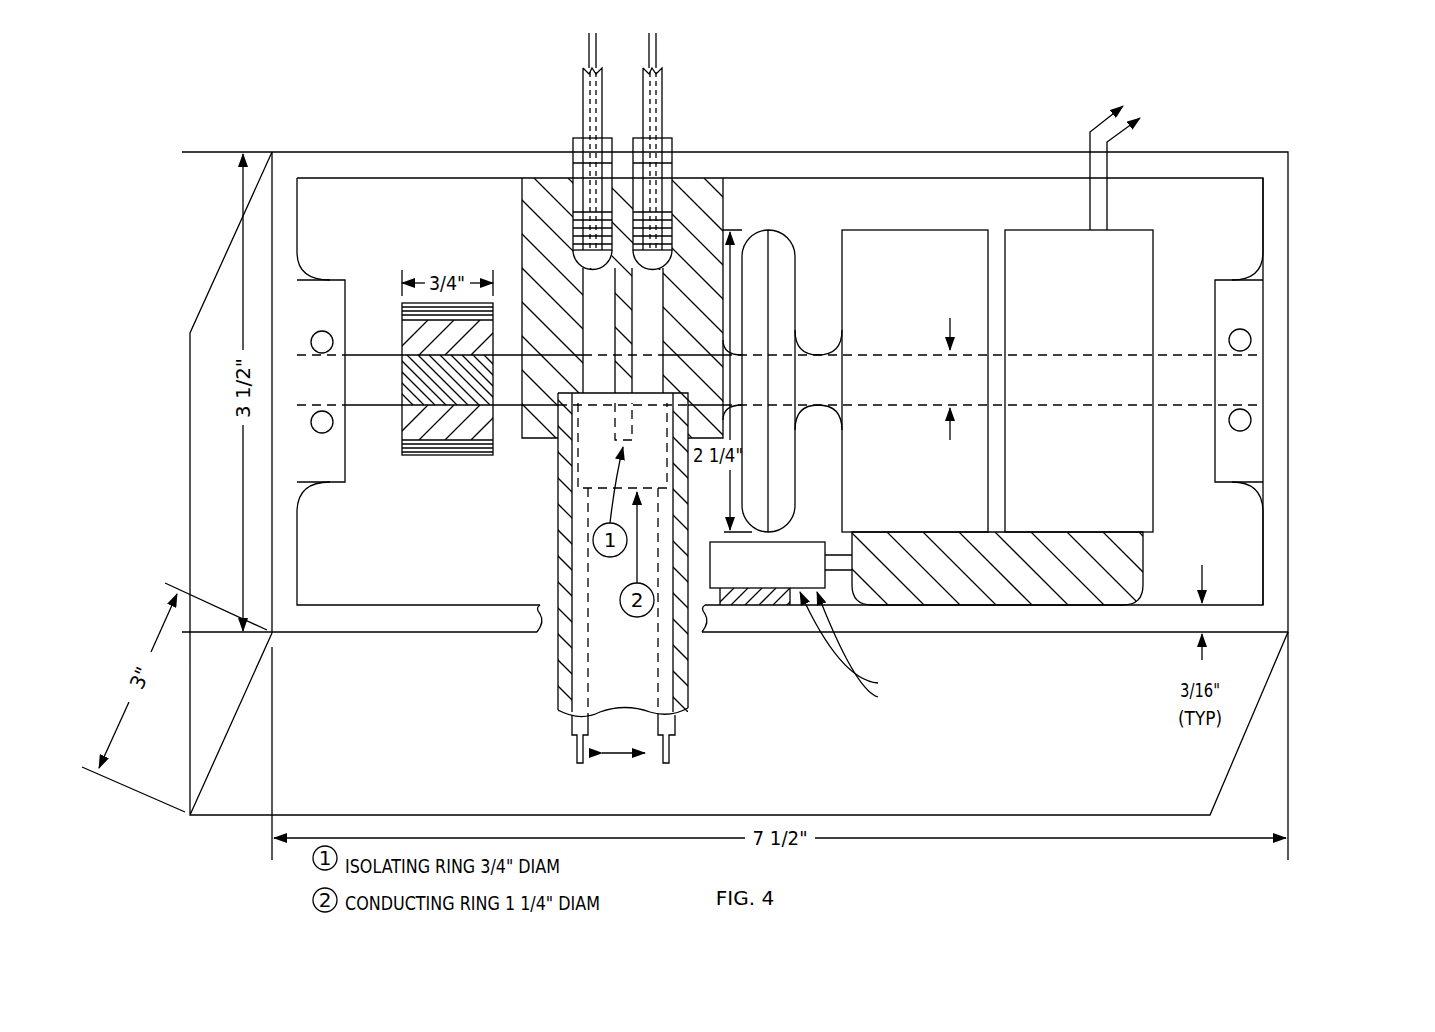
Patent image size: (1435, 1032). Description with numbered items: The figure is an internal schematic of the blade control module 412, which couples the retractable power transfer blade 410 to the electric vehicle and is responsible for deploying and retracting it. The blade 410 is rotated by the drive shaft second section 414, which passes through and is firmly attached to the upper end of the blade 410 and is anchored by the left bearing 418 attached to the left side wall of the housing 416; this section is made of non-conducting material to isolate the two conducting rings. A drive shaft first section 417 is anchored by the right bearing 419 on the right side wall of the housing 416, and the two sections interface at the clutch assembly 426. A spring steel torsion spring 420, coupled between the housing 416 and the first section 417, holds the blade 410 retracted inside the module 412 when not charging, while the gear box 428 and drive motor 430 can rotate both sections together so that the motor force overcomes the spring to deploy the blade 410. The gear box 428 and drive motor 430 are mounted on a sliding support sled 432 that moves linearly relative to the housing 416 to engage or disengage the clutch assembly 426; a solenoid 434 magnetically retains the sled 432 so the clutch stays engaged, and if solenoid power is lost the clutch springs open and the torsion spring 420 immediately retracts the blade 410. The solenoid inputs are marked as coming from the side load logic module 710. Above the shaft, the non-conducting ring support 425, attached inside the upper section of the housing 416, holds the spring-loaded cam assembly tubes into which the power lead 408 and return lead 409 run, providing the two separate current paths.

The lead 408 is at (583, 78).
The return lead 409 is at (666, 90).
The retractable power transfer blade 410 is at (680, 708).
The blade control module 412 is at (1300, 542).
The drive shaft second section 414 is at (367, 420).
The housing 416 is at (1300, 290).
The drive shaft first section 417 is at (1177, 350).
The left bearing 418 is at (330, 282).
The right bearing 419 is at (1243, 310).
The torsion spring 420 is at (450, 457).
The ring support 425 is at (537, 172).
The clutch assembly 426 is at (773, 242).
The gear box 428 is at (863, 252).
The drive motor 430 is at (1133, 255).
The sliding support sled 432 is at (1070, 597).
The solenoid 434 is at (777, 630).
The from side load logic module 710 is at (915, 674).